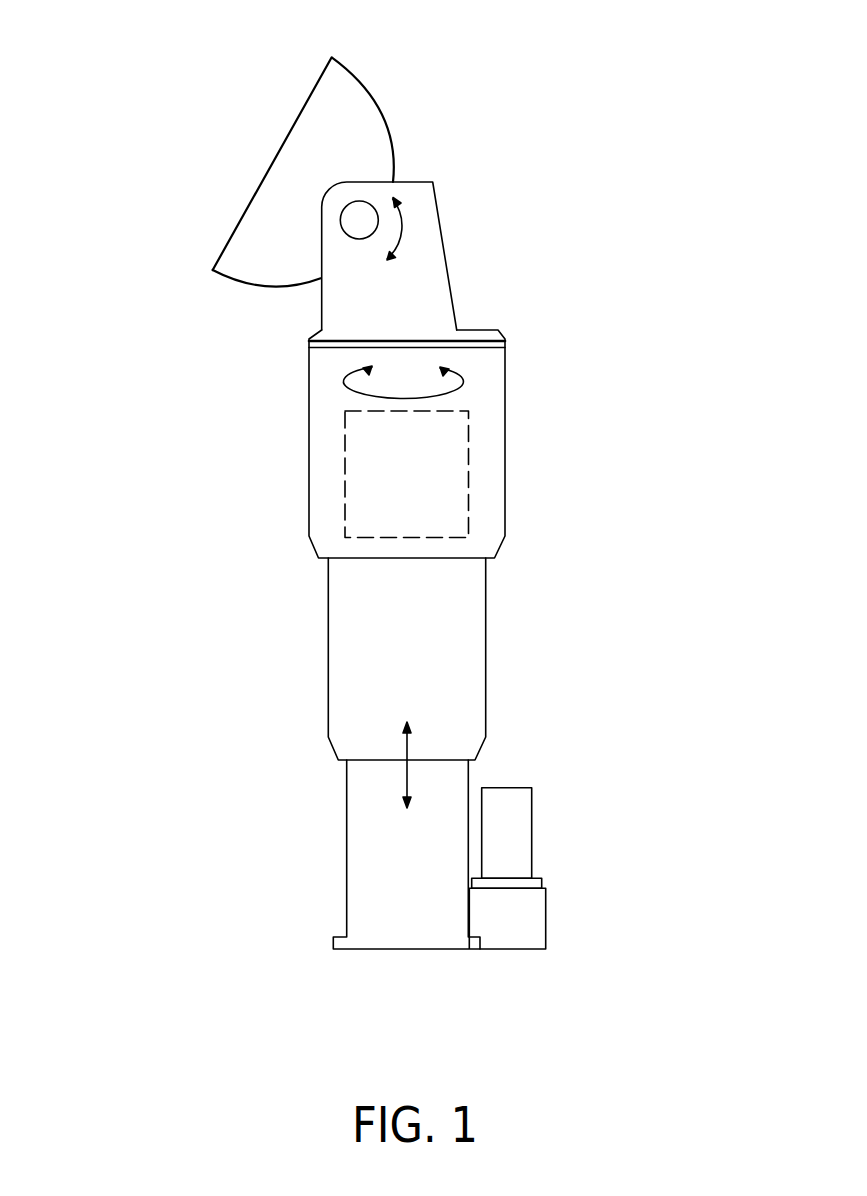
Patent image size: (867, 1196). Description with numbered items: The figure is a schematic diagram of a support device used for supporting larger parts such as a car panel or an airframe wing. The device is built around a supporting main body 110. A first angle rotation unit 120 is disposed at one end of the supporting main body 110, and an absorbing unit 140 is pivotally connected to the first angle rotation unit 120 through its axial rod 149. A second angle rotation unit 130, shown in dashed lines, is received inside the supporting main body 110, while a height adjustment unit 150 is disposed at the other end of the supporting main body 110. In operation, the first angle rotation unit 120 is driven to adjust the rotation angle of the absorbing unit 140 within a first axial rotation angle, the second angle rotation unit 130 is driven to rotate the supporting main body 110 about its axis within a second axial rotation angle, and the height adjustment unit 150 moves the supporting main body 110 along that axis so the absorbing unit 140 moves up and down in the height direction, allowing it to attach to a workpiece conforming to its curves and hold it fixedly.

The supporting main body 110 is at (485, 462).
The first angle rotation unit 120 is at (410, 278).
The second angle rotation unit 130 is at (345, 464).
The absorbing unit 140 is at (348, 122).
The axial rod 149 is at (359, 220).
The height adjustment unit 150 is at (300, 760).